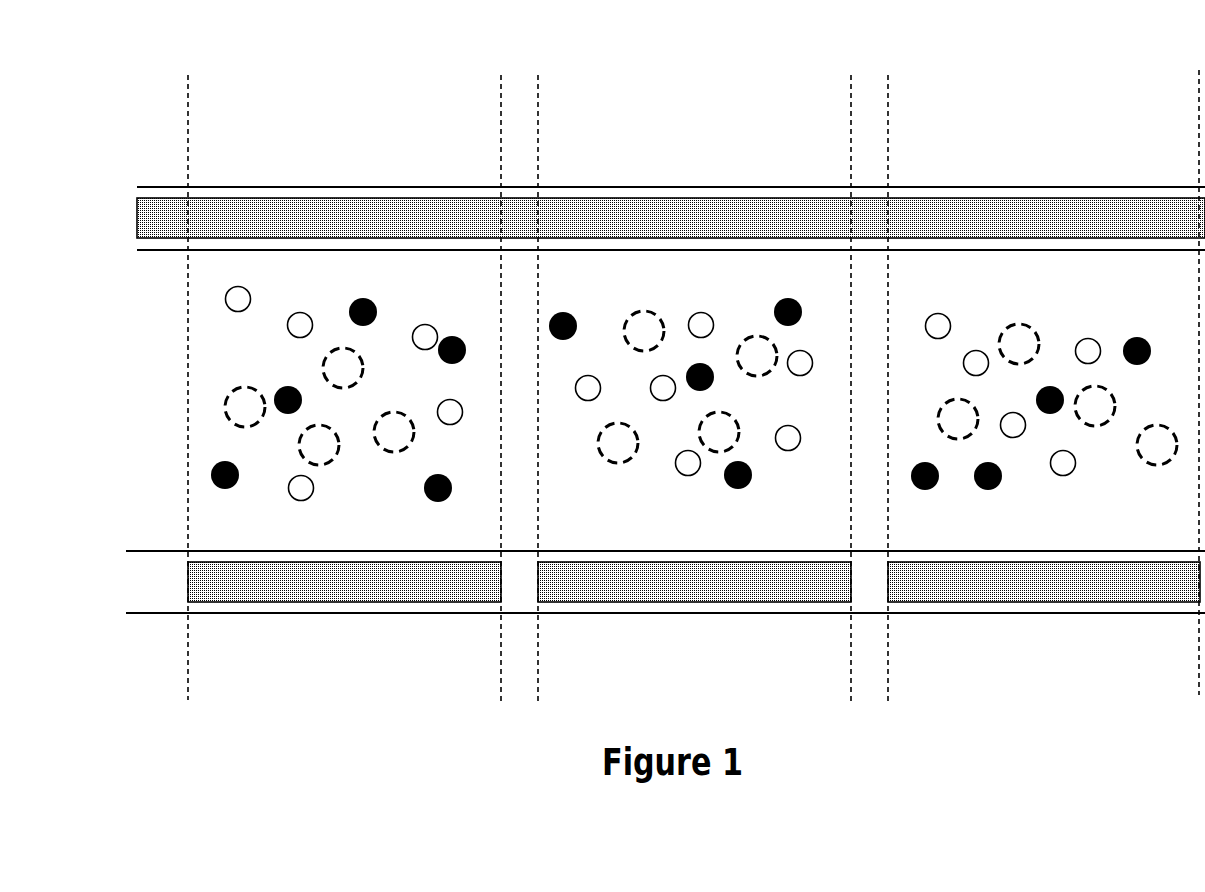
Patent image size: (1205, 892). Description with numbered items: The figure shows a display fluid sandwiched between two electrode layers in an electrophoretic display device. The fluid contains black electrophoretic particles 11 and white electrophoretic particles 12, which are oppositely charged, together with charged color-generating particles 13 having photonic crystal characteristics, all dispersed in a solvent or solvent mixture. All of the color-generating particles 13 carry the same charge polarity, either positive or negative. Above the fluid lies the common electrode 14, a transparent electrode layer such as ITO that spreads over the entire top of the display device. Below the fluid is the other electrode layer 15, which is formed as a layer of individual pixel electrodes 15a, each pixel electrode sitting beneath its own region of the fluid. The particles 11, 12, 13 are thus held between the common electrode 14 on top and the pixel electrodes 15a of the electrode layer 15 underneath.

The black electrophoretic particles 11 is at (200, 475).
The white electrophoretic particles 12 is at (214, 299).
The charged color-generating particles 13 is at (214, 401).
The common electrode 14 is at (625, 200).
The electrode layer 15 is at (138, 600).
The pixel electrodes 15a is at (350, 600).